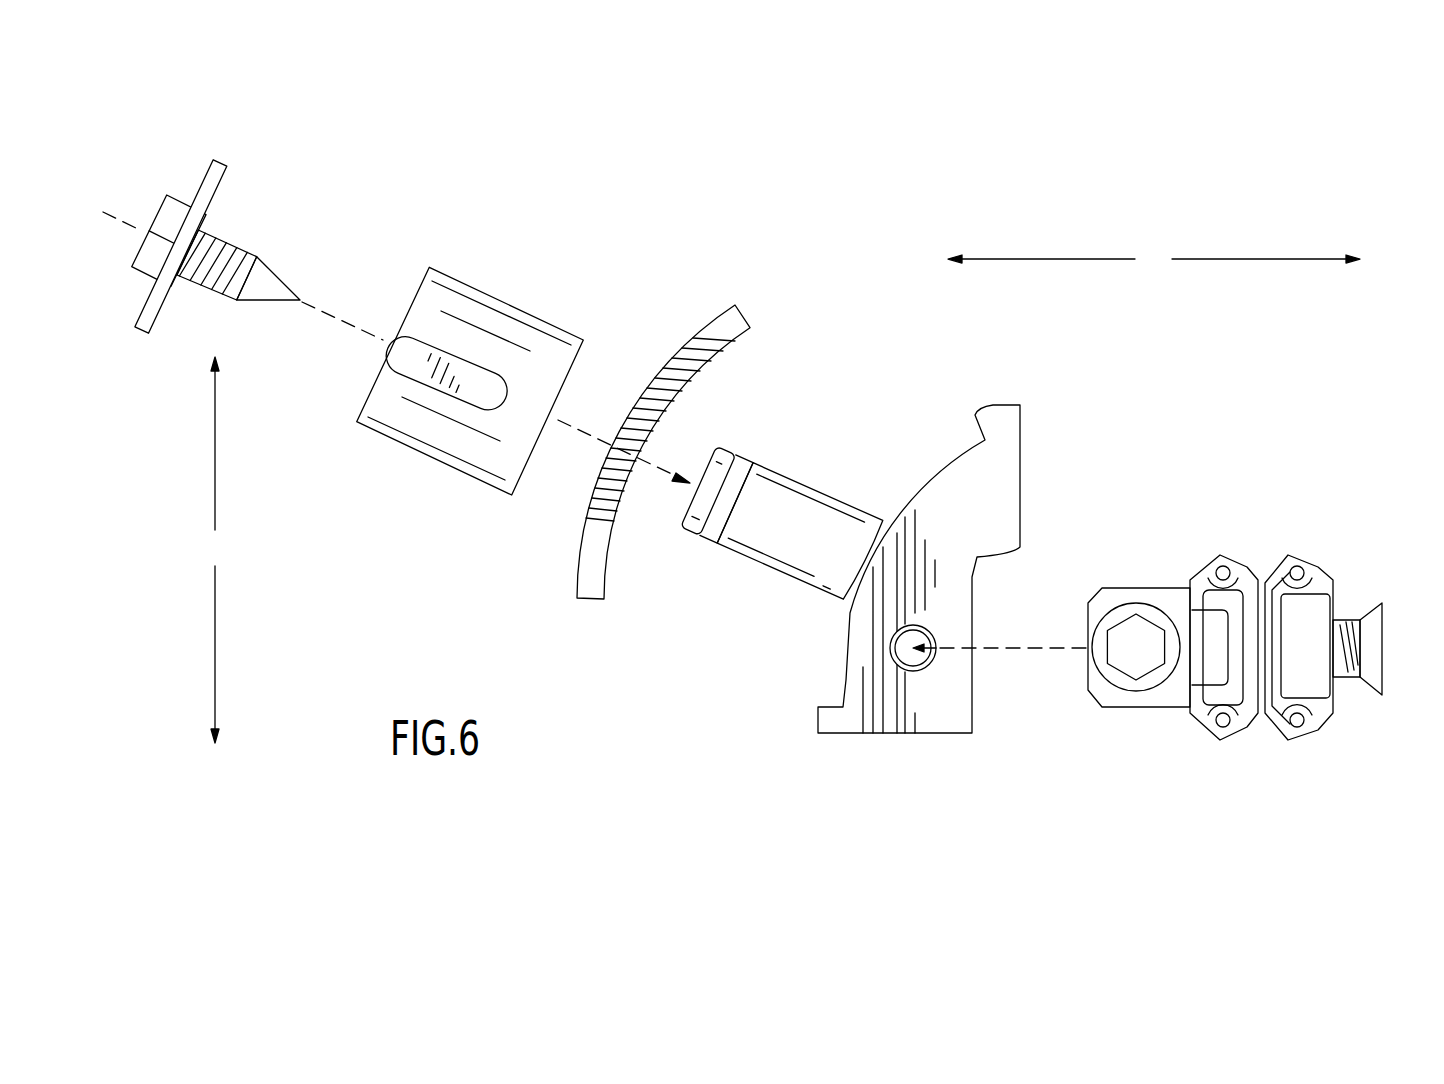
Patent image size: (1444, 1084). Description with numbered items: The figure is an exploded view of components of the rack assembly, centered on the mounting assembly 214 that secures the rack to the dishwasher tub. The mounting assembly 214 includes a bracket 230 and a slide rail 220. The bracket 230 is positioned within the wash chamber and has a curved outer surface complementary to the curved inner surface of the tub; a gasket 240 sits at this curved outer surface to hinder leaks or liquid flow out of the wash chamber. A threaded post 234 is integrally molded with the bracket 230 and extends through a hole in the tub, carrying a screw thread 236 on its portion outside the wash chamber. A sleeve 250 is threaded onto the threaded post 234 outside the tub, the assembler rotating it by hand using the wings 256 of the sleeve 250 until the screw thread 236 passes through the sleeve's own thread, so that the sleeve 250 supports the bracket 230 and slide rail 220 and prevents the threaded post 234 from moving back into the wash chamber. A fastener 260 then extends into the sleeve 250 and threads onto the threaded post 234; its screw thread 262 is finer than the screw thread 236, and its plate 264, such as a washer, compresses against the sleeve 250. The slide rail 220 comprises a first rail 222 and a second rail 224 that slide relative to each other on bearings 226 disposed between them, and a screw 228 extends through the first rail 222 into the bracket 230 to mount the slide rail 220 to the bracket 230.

The mounting assembly 214 is at (874, 201).
The slide rail 220 is at (1337, 687).
The first rail 222 is at (1201, 563).
The second rail 224 is at (1317, 560).
The bearings 226 is at (1223, 566).
The screw 228 is at (1133, 655).
The bracket 230 is at (1010, 478).
The threaded post 234 is at (772, 528).
The screw thread 236 is at (717, 494).
The gasket 240 is at (710, 330).
The sleeve 250 is at (422, 353).
The wings 256 is at (400, 356).
The fastener 260 is at (168, 212).
The screw thread 262 is at (240, 262).
The plate 264 is at (219, 163).